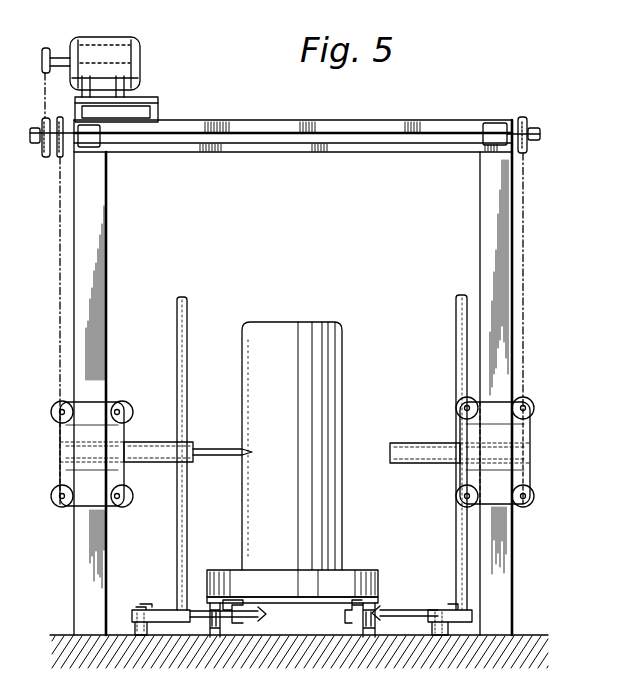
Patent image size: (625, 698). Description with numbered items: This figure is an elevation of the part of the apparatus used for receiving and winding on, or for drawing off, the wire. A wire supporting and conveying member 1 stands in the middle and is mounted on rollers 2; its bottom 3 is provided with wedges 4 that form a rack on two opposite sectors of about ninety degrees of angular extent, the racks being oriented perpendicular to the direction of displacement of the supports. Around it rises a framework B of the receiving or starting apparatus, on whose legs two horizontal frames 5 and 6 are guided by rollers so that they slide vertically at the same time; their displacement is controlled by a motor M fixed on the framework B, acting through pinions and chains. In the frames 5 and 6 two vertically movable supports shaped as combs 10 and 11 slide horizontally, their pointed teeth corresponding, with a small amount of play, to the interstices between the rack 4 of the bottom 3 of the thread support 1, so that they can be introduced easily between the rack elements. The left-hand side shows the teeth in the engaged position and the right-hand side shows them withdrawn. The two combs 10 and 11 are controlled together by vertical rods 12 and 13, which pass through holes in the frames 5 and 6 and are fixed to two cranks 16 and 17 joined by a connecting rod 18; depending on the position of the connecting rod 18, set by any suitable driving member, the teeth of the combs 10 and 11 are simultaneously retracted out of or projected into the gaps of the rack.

The motor M is at (103, 48).
The framework B is at (99, 238).
The wire supporting and conveying member 1 is at (262, 340).
The rollers 2 is at (213, 640).
The bottom 3 is at (286, 602).
The wedges 4 is at (370, 569).
The horizontal frame 5 is at (149, 440).
The horizontal frame 6 is at (431, 438).
The comb 10 is at (213, 448).
The comb 11 is at (390, 460).
The vertical rod 12 is at (177, 527).
The vertical rod 13 is at (456, 537).
The crank 16 is at (157, 611).
The crank 17 is at (470, 613).
The connecting rod 18 is at (197, 612).